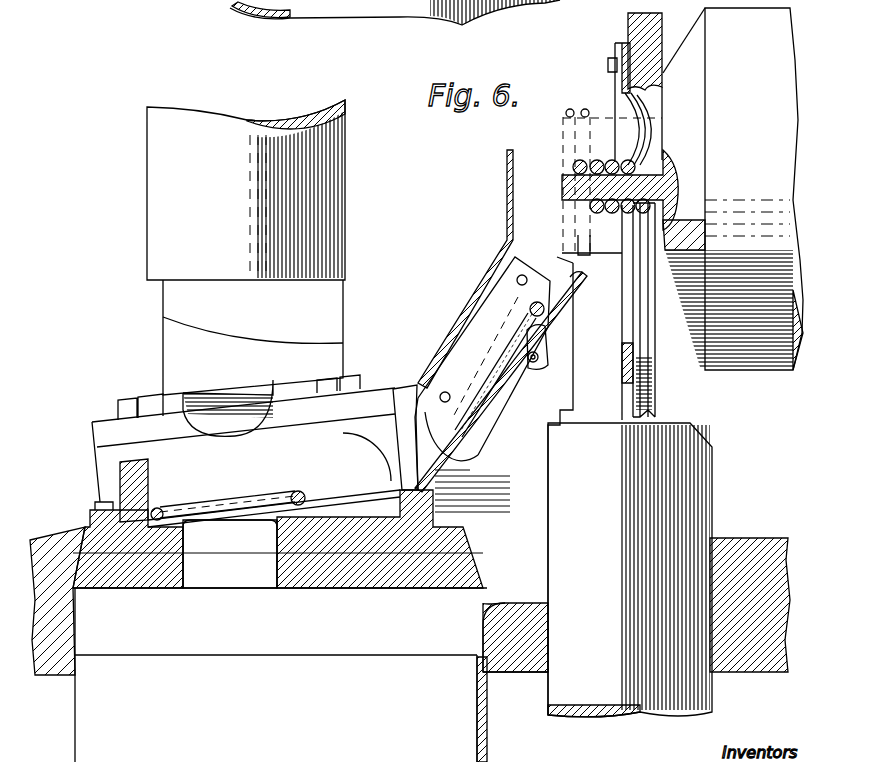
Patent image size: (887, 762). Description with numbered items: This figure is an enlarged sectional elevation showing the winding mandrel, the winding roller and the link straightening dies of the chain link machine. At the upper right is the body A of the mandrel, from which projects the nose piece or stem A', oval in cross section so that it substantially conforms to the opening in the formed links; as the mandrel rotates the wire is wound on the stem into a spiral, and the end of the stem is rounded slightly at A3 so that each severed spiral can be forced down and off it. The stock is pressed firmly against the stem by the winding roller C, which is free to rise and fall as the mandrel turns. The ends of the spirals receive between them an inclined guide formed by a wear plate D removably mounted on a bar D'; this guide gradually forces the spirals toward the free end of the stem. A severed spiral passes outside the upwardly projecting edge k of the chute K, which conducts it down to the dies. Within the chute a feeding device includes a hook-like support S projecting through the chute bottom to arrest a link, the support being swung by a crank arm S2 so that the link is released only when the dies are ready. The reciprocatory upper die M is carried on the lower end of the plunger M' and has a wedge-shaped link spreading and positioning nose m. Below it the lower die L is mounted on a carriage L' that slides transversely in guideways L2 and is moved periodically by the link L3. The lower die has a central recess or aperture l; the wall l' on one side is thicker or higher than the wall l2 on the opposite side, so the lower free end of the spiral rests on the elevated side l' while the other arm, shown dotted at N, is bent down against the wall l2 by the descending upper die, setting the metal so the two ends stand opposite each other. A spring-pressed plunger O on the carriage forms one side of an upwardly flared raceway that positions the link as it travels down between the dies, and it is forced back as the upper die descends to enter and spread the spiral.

The plunger M' is at (220, 190).
The reciprocatory die M is at (220, 337).
The link spreading and positioning nose m is at (282, 400).
The thicker wall of aperture l' is at (243, 438).
The lower wall of aperture l2 is at (343, 490).
The central recess or aperture l is at (230, 554).
The lower die L is at (278, 561).
The carriage L' is at (280, 666).
The guideways L2 is at (72, 560).
The link L3 is at (523, 464).
The spring-pressed plunger O is at (260, 490).
The spiral arm position N is at (302, 480).
The winding roller C is at (380, 483).
The hook-like support S is at (482, 384).
The crank arm S2 is at (525, 250).
The lever S'' is at (564, 374).
The upwardly projecting edge k is at (573, 280).
The chute K is at (546, 305).
The body of the mandrel A is at (733, 189).
The nose piece or stem A' is at (614, 196).
The rounded end of stem A3 is at (563, 128).
The wear plate D is at (612, 104).
The bar D' is at (626, 51).